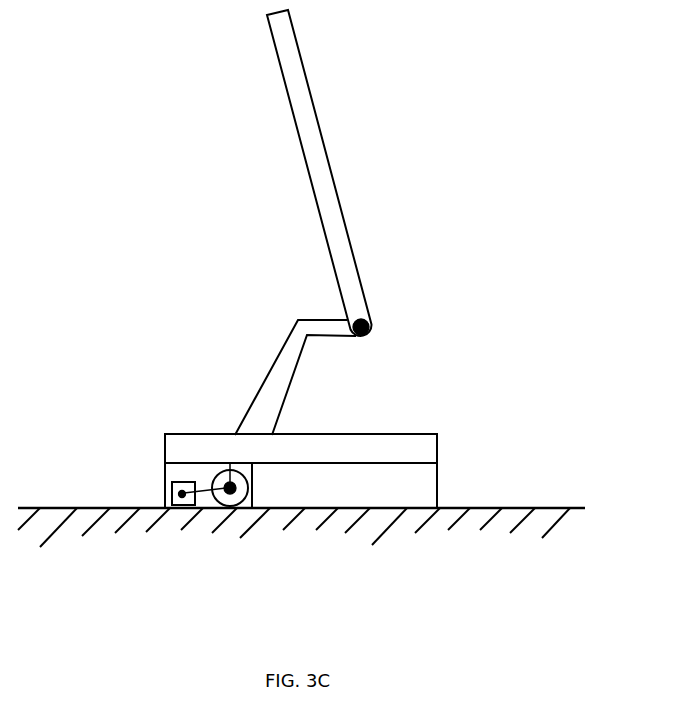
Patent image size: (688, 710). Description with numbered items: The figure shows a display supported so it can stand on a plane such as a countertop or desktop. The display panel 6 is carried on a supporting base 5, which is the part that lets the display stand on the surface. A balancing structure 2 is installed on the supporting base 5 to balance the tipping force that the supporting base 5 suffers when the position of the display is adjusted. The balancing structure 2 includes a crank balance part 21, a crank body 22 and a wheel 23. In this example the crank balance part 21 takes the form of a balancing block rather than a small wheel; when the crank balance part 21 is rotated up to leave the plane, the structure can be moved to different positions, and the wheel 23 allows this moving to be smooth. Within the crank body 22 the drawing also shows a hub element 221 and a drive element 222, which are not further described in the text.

The balancing structure 2 is at (260, 587).
The crank balance part 21 is at (185, 520).
The crank body 22 is at (195, 515).
The driving wheel hub 221 is at (261, 473).
The motor 222 is at (143, 483).
The wheel 23 is at (239, 524).
The supporting base 5 is at (261, 377).
The display panel 6 is at (330, 173).